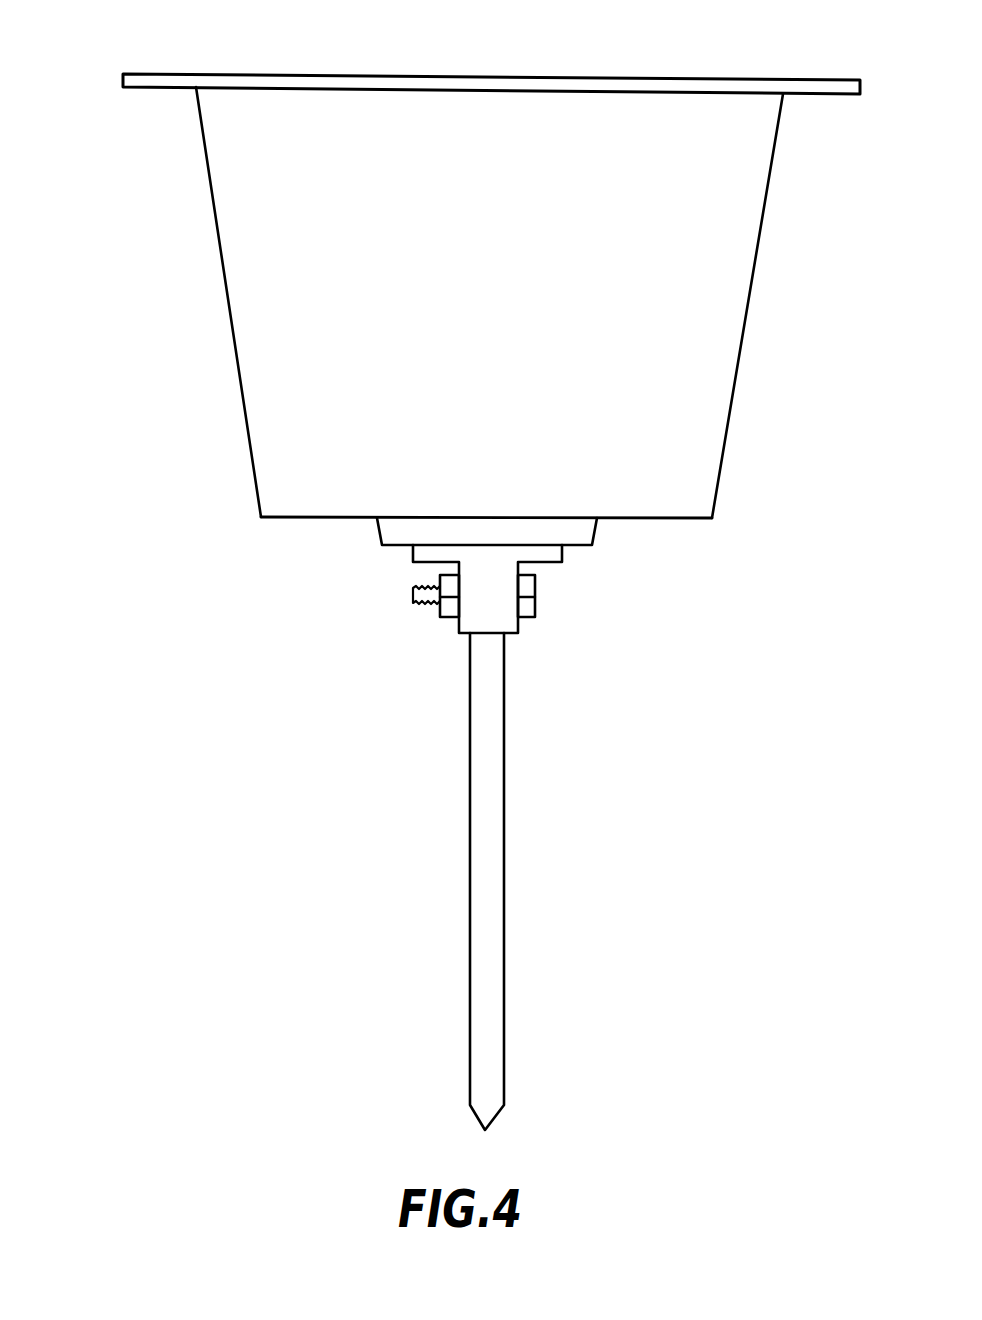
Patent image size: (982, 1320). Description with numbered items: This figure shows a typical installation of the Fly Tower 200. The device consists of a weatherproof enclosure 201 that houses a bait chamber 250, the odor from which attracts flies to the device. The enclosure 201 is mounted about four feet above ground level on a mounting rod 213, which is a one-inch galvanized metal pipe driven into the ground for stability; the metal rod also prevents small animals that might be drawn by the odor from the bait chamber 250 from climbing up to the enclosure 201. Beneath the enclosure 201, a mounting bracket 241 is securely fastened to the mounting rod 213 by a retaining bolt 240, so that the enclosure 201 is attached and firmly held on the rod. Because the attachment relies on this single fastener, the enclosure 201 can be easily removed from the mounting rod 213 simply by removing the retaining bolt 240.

The Fly Tower 200 is at (491, 47).
The weatherproof enclosure 201 is at (218, 268).
The bait chamber 250 is at (603, 483).
The retaining bolt 240 is at (676, 596).
The mounting bracket 241 is at (412, 560).
The mounting rod 213 is at (466, 848).